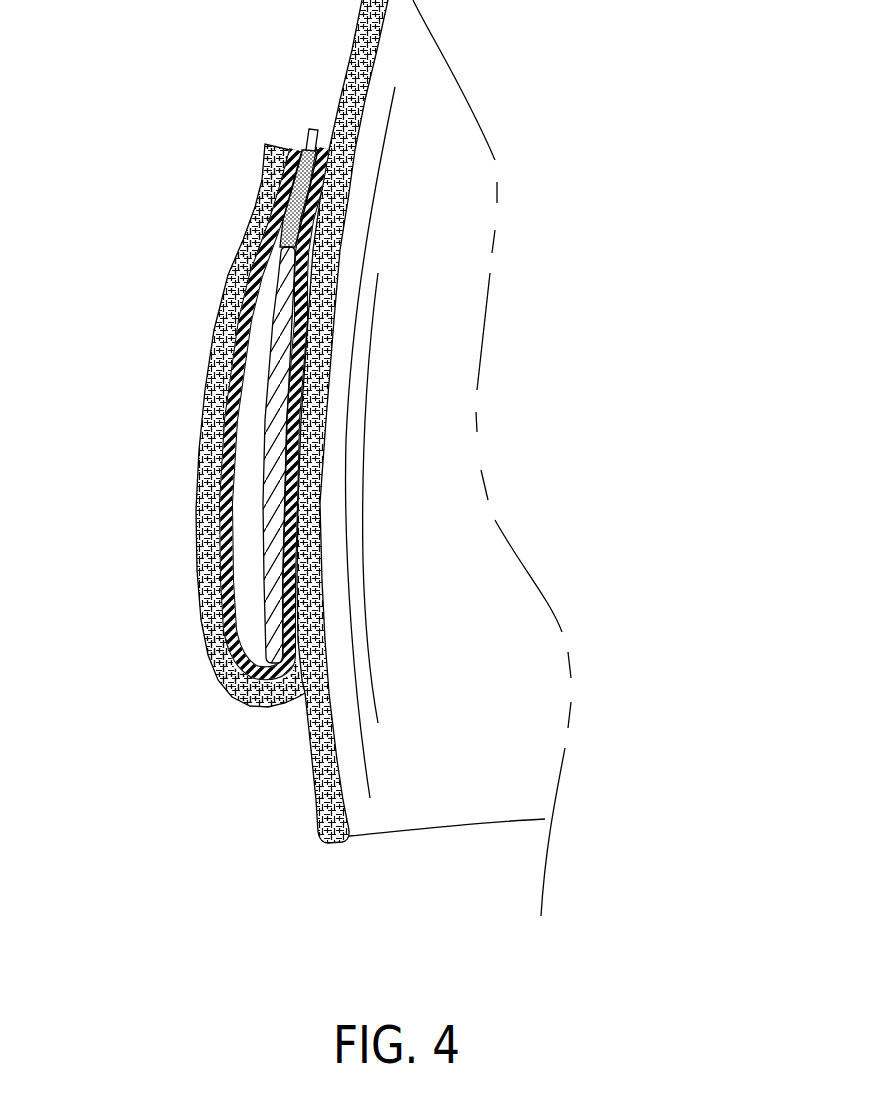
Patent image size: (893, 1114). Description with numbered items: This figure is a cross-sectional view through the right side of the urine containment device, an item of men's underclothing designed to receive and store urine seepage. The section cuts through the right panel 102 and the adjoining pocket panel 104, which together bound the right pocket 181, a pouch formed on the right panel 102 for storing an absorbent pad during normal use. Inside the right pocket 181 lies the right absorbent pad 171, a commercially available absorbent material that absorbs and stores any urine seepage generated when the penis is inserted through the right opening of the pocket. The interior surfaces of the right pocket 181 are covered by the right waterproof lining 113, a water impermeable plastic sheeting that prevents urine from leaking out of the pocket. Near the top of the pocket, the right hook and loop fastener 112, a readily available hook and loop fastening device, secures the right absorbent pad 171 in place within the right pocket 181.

The right panel 102 is at (313, 507).
The pocket panel 104 is at (215, 671).
The right hook and loop fastener 112 is at (290, 197).
The right waterproof lining 113 is at (197, 510).
The right absorbent pad 171 is at (287, 310).
The right pocket 181 is at (222, 297).